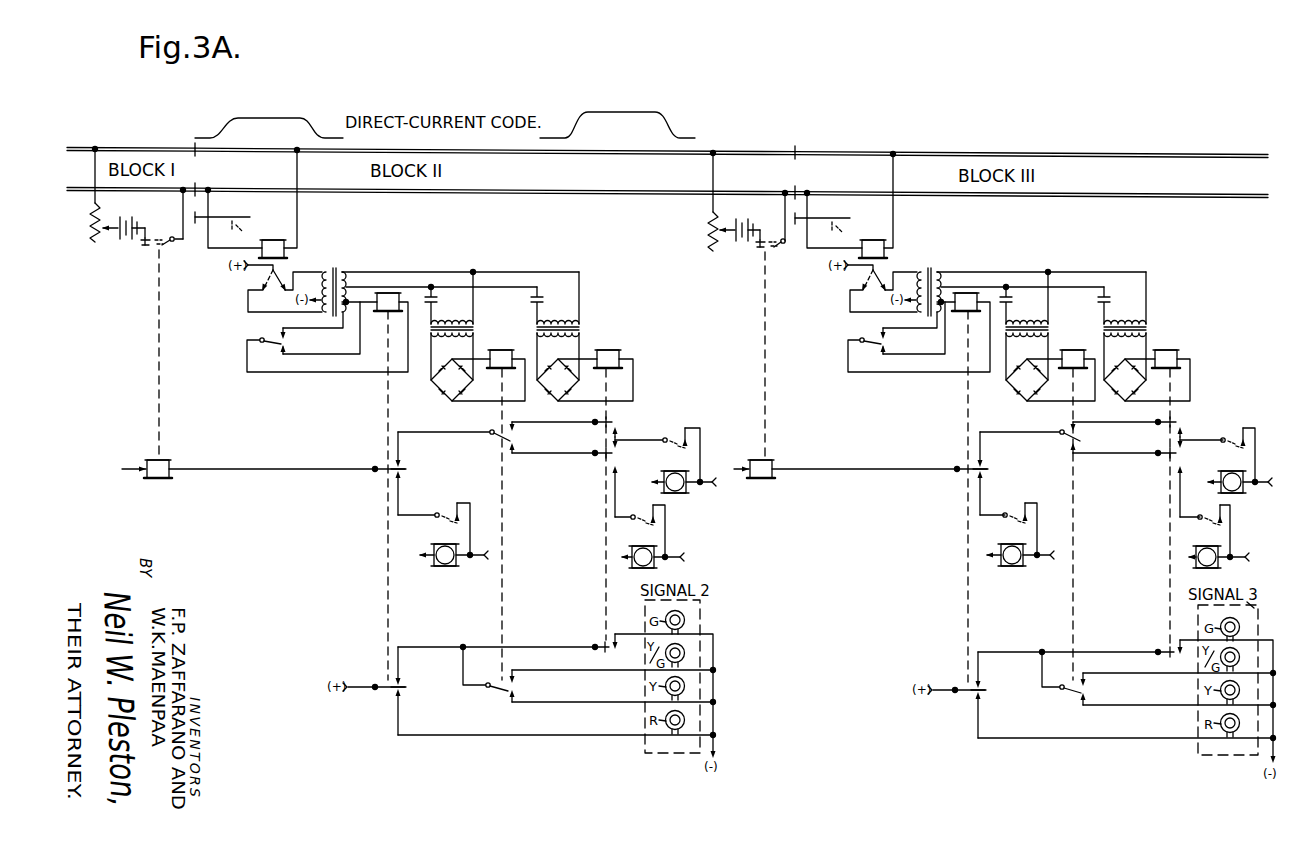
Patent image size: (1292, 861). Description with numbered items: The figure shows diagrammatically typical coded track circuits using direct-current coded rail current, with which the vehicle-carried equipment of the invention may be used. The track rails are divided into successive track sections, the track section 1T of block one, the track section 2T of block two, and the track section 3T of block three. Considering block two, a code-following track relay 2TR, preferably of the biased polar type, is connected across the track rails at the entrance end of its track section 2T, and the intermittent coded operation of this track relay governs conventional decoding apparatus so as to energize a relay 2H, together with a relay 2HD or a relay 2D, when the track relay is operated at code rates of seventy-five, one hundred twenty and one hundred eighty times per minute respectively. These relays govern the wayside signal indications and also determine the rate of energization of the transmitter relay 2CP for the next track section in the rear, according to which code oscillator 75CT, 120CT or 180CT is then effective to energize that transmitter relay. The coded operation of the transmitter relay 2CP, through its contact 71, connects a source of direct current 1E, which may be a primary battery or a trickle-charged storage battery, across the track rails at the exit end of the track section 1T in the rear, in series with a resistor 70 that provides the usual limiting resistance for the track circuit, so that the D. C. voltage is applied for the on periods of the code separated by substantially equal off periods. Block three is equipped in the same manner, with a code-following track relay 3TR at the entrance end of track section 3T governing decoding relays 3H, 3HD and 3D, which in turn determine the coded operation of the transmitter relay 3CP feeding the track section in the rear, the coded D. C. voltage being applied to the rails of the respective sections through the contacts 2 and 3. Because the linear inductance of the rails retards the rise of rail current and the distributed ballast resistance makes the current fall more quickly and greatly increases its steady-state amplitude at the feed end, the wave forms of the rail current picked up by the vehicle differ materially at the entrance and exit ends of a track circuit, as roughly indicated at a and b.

The track section 1T is at (70, 152).
The track section 2T is at (575, 155).
The track section 3T is at (1105, 158).
The rail current wave form at entrance end a is at (284, 118).
The rail current wave form at exit end b is at (607, 113).
The source of direct current 1E is at (137, 219).
The resistor 70 is at (96, 238).
The contact 71 is at (168, 246).
The contact 2 is at (212, 214).
The contact 3 is at (812, 215).
The code-following track relay 2TR is at (271, 239).
The code-following track relay 3TR is at (871, 239).
The relay 2H is at (400, 298).
The relay 3H is at (978, 298).
The relay 2HD is at (478, 501).
The relay 3HD is at (1050, 501).
The relay 2D is at (585, 481).
The relay 3D is at (1147, 483).
The transmitter relay 2CP is at (140, 458).
The transmitter relay 3CP is at (747, 458).
The code oscillator 75CT is at (738, 534).
The code oscillator 120CT is at (936, 537).
The code oscillator 180CT is at (958, 466).